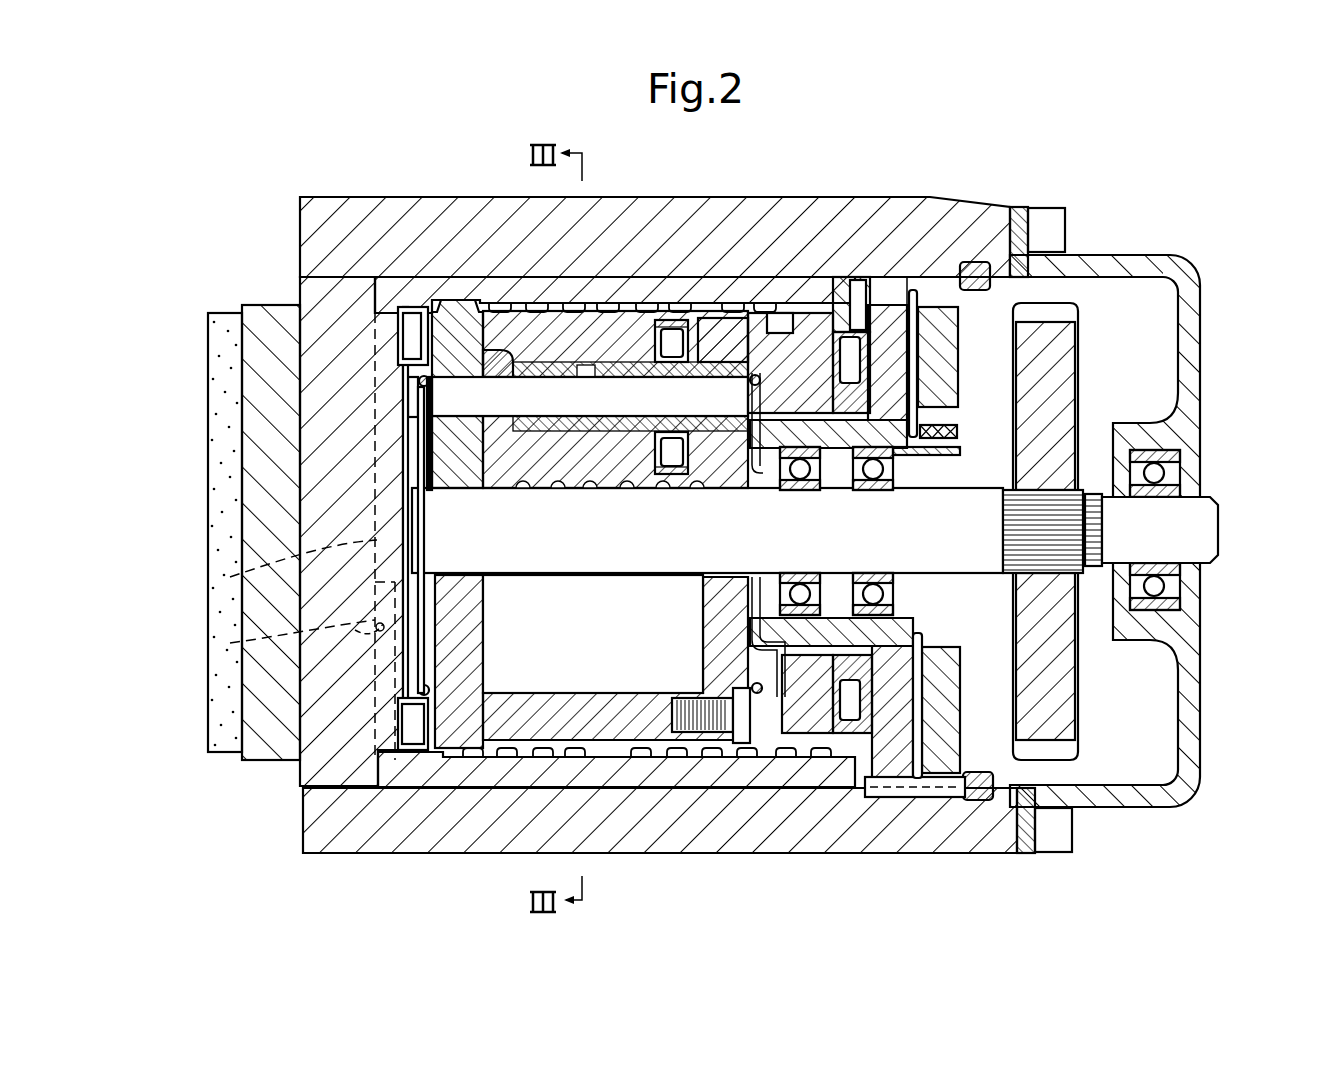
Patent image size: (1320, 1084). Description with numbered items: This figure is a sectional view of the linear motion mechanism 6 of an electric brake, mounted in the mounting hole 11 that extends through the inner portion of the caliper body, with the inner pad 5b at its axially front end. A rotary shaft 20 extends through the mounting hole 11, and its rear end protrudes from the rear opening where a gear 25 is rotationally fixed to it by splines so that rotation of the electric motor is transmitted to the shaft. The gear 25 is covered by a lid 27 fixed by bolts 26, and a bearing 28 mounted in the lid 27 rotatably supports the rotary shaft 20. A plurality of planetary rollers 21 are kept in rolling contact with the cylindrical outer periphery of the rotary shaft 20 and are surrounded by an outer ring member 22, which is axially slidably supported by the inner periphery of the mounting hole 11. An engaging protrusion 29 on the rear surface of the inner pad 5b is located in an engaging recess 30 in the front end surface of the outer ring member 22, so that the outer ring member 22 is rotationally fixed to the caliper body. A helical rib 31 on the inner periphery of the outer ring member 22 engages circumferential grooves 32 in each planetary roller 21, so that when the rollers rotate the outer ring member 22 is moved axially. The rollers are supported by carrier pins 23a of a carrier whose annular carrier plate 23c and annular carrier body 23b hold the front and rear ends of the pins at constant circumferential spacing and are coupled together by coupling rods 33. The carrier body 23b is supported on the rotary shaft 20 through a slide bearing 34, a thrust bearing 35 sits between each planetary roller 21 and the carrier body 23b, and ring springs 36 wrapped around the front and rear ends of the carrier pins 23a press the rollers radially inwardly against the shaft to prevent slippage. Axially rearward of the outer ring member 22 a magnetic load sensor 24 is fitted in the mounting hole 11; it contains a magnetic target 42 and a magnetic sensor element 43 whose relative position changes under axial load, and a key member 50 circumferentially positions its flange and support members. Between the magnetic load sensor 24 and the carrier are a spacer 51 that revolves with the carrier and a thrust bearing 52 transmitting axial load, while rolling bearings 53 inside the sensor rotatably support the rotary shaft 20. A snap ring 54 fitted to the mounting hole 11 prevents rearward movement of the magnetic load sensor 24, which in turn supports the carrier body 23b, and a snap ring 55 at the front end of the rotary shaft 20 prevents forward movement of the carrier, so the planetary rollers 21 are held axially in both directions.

The inner pad 5b is at (223, 327).
The linear motion mechanism 6 is at (590, 300).
The mounting hole 11 is at (363, 794).
The rotary shaft 20 is at (771, 551).
The planetary rollers 21 is at (640, 318).
The outer ring member 22 is at (468, 777).
The carrier pins 23a is at (490, 395).
The carrier body 23b is at (718, 332).
The carrier plate 23c is at (457, 330).
The magnetic load sensor 24 is at (963, 384).
The gear 25 is at (1080, 722).
The bolts 26 is at (1050, 228).
The lid 27 is at (1192, 805).
The bearing 28 is at (1178, 497).
The engaging protrusion 29 is at (230, 577).
The engaging recess 30 is at (230, 643).
The helical rib 31 is at (540, 757).
The circumferential grooves 32 is at (623, 487).
The coupling rods 33 is at (578, 705).
The slide bearing 34 is at (715, 478).
The thrust bearing 35 is at (670, 458).
The ring springs 36 is at (433, 385).
The magnetic target 42 is at (962, 432).
The magnetic sensor element 43 is at (952, 413).
The key member 50 is at (922, 793).
The spacer 51 is at (807, 307).
The thrust bearing 52 is at (850, 330).
The rolling bearings 53 is at (876, 578).
The snap ring 54 is at (972, 264).
The snap ring 55 is at (425, 480).